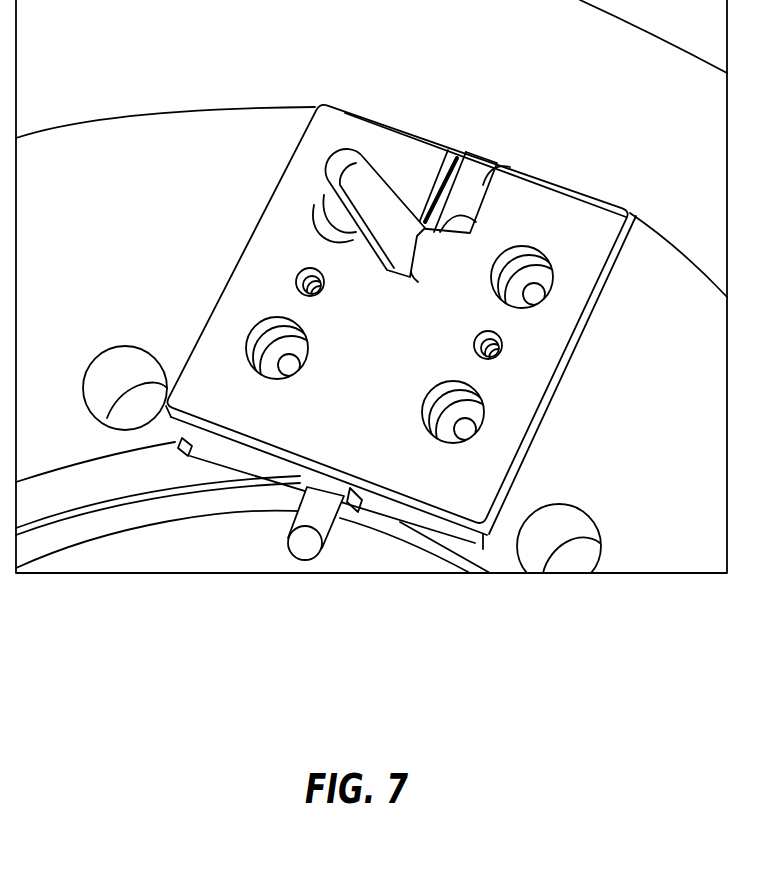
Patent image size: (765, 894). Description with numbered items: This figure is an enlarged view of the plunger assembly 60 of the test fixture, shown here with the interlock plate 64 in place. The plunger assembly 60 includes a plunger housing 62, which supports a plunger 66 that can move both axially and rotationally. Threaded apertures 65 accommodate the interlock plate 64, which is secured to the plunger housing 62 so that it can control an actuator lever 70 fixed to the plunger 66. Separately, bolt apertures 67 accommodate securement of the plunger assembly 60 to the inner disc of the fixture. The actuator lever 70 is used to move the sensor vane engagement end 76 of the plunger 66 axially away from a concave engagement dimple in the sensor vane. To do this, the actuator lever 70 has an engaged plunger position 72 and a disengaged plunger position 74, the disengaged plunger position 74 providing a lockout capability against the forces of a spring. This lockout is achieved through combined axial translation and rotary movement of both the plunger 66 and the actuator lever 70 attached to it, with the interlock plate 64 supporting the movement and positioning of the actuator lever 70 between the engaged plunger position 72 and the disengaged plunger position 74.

The plunger assembly 60 is at (280, 473).
The plunger housing 62 is at (245, 456).
The interlock plate 64 is at (375, 369).
The threaded apertures 65 is at (307, 269).
The plunger 66 is at (323, 535).
The bolt apertures 67 is at (257, 334).
The actuator lever 70 is at (376, 198).
The engaged plunger position 72 is at (418, 253).
The disengaged plunger position 74 is at (500, 157).
The sensor vane engagement end 76 is at (302, 547).